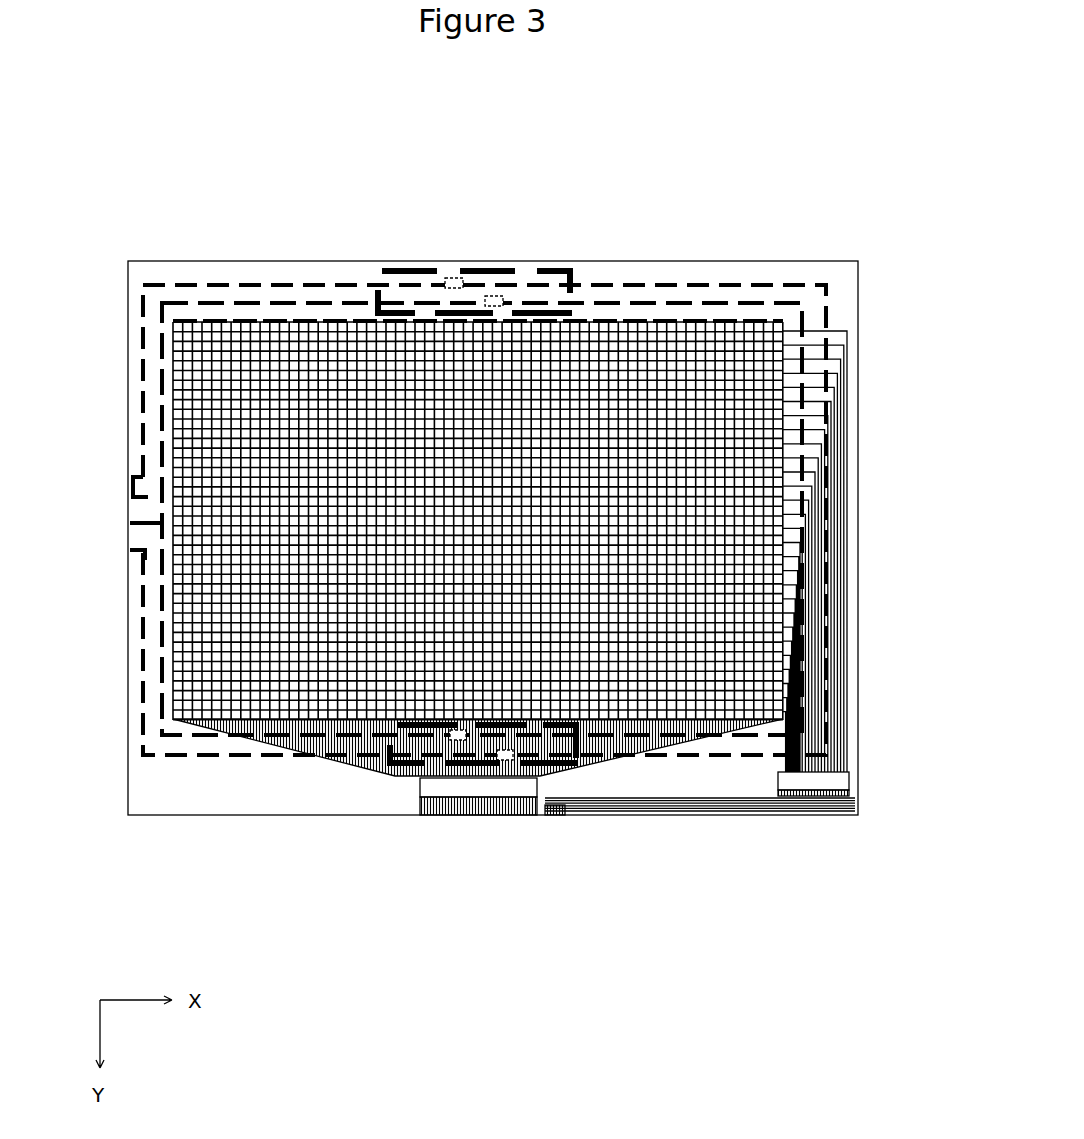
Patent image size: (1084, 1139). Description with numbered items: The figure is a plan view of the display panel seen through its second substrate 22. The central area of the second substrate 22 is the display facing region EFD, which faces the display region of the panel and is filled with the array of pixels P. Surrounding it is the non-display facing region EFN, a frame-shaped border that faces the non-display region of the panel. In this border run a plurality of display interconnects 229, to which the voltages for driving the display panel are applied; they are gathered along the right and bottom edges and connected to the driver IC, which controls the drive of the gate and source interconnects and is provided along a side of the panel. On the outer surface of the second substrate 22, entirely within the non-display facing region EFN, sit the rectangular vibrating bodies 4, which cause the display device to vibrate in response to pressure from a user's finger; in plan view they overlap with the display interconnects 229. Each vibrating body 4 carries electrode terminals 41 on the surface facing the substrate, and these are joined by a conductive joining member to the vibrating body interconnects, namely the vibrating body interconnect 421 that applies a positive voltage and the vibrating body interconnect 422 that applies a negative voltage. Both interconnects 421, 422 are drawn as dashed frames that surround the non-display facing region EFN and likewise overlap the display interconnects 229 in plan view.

The second substrate 22 is at (579, 84).
The vibrating body 4 is at (378, 300).
The electrode terminal 41 is at (455, 278).
The pixel P is at (250, 375).
The vibrating body interconnect 422 is at (140, 362).
The vibrating body interconnect 421 is at (140, 432).
The display interconnect 229 is at (368, 768).
The driver IC is at (530, 800).
The display facing region EFD is at (676, 322).
The non-display facing region EFN is at (727, 278).